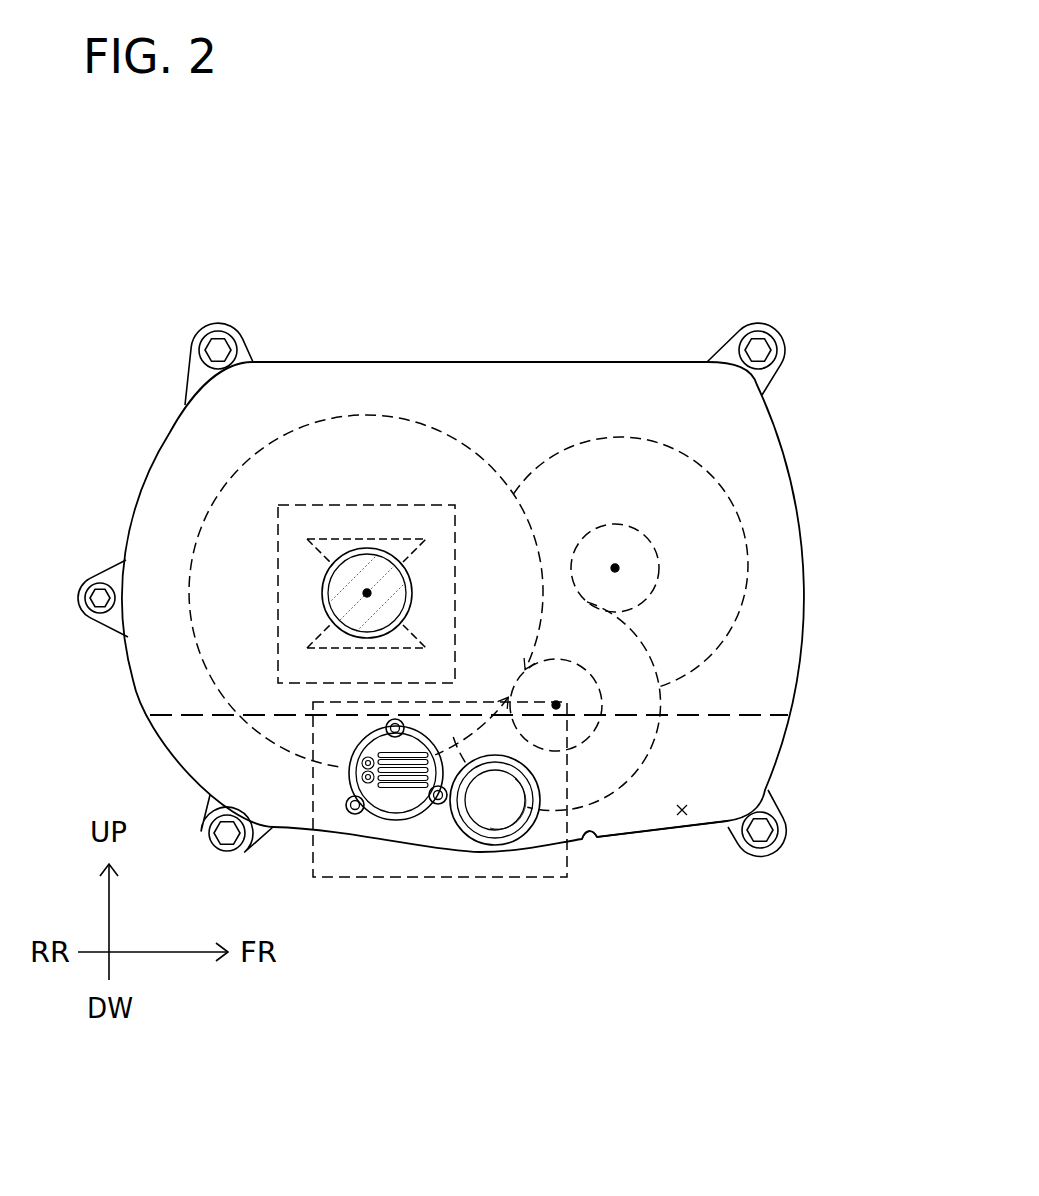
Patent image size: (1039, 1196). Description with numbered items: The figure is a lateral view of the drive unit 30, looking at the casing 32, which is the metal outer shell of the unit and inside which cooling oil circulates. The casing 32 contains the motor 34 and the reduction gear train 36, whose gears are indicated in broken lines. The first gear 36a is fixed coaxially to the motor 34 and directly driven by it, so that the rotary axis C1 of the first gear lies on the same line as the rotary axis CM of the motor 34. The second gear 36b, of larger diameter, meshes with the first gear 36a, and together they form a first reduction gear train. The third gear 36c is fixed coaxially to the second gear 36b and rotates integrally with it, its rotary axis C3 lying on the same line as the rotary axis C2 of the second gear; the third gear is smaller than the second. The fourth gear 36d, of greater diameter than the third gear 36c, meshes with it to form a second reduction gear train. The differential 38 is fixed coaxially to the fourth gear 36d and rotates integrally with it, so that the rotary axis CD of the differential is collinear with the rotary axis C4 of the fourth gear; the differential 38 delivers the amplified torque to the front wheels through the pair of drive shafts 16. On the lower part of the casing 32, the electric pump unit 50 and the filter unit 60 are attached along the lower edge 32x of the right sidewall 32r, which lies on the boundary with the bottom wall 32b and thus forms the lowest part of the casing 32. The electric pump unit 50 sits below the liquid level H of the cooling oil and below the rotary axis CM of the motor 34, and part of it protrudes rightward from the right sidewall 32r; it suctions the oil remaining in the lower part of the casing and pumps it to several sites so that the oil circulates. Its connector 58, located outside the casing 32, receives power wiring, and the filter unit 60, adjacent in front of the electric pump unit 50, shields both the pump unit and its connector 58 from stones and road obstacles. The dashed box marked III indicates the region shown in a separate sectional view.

The drive unit 30 is at (778, 206).
The casing 32 is at (293, 362).
The lower edge 32x is at (590, 842).
The bottom wall 32b is at (646, 846).
The right sidewall 32r is at (684, 814).
The motor 34 is at (633, 435).
The reduction gear train 36 is at (680, 634).
The first gear 36a is at (661, 567).
The second gear 36b is at (663, 667).
The third gear 36c is at (590, 733).
The fourth gear 36d is at (525, 517).
The differential 38 is at (393, 505).
The drive shafts 16 is at (343, 573).
The electric pump unit 50 is at (402, 812).
The connector 58 is at (355, 808).
The filter unit 60 is at (505, 828).
The liquid level H is at (178, 714).
The section line III is at (483, 880).
The rotary axis of the fourth gear C4 is at (206, 570).
The rotary axis of the differential CD is at (367, 593).
The rotary axis of the motor CM is at (758, 513).
The rotary axis of the first gear C1 is at (615, 568).
The rotary axis of the second gear C2 is at (734, 711).
The rotary axis of the third gear C3 is at (557, 705).